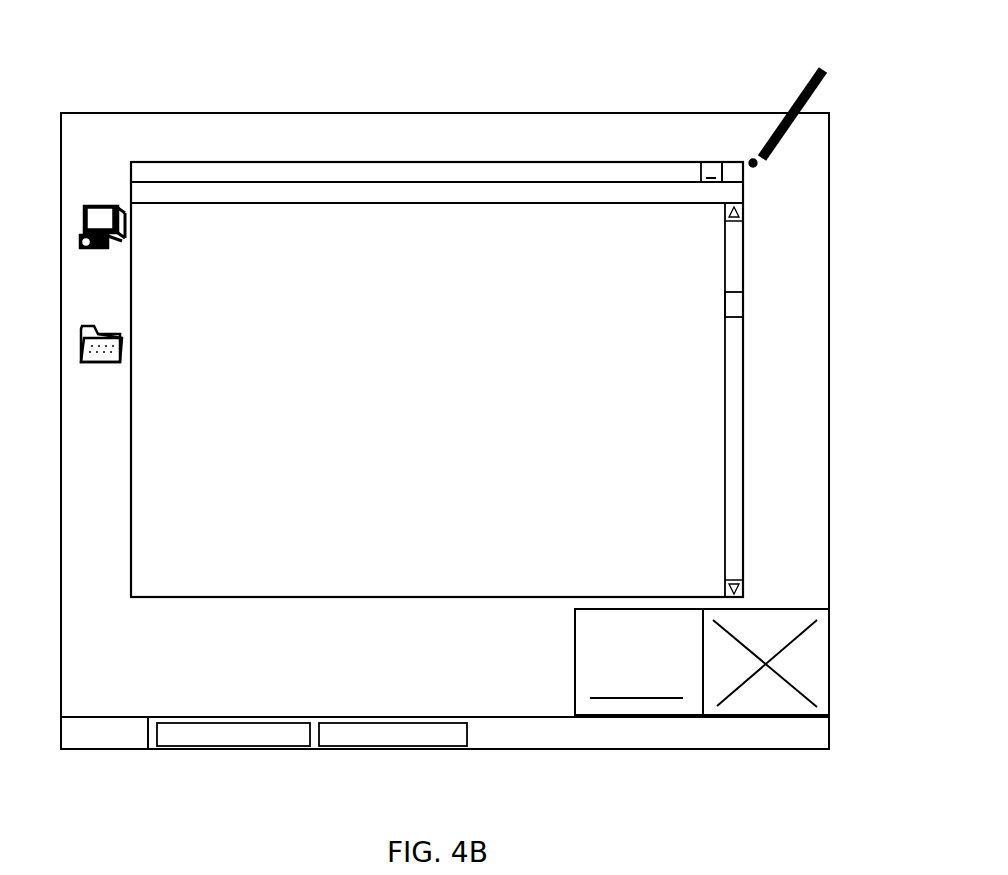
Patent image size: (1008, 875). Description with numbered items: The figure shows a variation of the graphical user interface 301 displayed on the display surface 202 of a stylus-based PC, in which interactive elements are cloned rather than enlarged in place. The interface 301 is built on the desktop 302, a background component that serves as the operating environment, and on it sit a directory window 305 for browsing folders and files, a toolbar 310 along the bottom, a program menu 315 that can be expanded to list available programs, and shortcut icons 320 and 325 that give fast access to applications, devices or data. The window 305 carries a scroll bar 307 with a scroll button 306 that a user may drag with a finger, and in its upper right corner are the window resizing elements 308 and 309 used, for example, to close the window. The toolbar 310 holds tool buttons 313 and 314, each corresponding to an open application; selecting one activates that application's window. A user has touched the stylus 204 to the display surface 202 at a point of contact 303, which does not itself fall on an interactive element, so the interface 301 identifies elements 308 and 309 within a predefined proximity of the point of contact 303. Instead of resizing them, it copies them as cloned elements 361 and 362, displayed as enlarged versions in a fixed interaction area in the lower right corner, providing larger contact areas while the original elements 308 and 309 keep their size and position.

The display surface 202 is at (623, 752).
The stylus 204 is at (820, 63).
The graphical user interface 301 is at (273, 127).
The desktop 302 is at (437, 409).
The point of contact 303 is at (785, 203).
The directory window 305 is at (423, 160).
The scroll button 306 is at (743, 306).
The scroll bar 307 is at (773, 452).
The window resizing element 308 is at (710, 161).
The window resizing element 309 is at (738, 159).
The toolbar 310 is at (445, 730).
The tool button 313 is at (273, 742).
The tool button 314 is at (410, 743).
The program menu 315 is at (118, 714).
The icon 320 is at (115, 249).
The icon 325 is at (118, 357).
The cloned element 361 is at (595, 653).
The cloned element 362 is at (775, 705).